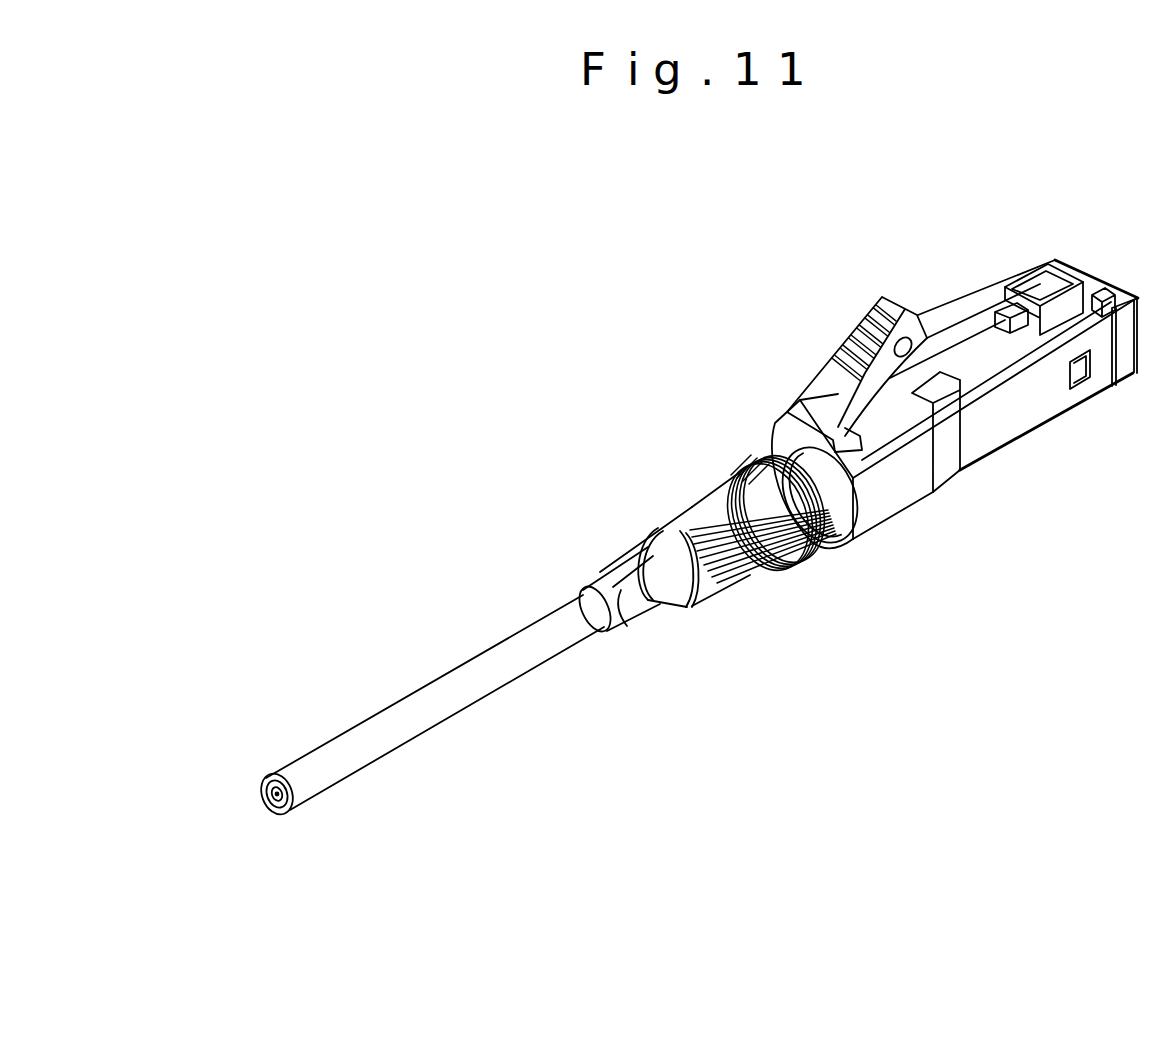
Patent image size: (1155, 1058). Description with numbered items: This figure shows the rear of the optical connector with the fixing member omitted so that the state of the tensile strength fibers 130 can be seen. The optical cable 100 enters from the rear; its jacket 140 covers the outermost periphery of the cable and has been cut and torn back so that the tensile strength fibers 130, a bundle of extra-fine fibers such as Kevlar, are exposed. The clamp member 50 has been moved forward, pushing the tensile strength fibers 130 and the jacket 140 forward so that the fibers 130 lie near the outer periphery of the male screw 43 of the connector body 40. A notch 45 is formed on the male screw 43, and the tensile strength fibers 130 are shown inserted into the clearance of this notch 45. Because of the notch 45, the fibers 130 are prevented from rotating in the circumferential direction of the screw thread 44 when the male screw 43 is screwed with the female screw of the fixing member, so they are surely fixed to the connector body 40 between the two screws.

The optical cable 100 is at (432, 712).
The jacket 140 is at (692, 510).
The clamp member 50 is at (648, 596).
The tensile strength fibers 130 is at (738, 580).
The notch 45 is at (765, 575).
The male screw 43 is at (812, 555).
The screw thread 44 is at (850, 660).
The connector body 40 is at (920, 485).